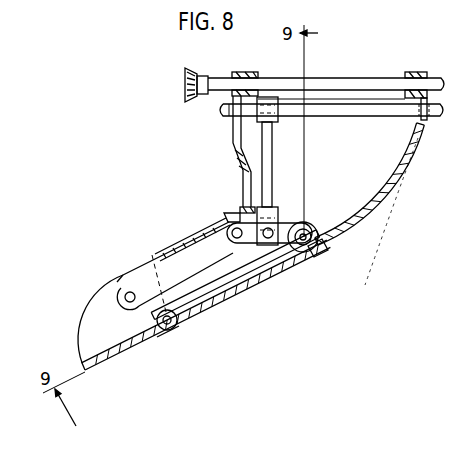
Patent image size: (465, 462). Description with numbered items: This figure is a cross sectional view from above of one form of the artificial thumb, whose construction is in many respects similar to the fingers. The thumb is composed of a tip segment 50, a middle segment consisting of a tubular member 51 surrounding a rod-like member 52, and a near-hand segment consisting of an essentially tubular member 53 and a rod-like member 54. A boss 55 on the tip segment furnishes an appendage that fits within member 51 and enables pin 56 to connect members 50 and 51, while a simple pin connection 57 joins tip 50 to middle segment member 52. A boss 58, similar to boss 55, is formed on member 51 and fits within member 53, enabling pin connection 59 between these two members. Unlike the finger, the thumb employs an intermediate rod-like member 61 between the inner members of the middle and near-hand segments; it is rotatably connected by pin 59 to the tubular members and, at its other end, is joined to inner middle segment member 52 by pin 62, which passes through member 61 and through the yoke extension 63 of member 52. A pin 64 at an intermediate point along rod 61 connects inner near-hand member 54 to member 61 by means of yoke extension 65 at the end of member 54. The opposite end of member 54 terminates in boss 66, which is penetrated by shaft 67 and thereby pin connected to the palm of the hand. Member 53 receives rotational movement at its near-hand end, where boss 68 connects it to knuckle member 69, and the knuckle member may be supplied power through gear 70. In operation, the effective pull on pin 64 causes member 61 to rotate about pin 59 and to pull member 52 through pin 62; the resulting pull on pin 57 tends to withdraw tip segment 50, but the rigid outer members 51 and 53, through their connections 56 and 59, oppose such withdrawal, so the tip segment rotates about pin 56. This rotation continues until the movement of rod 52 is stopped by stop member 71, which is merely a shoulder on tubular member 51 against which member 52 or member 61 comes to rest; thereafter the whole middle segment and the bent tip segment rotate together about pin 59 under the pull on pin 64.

The tip segment 50 is at (121, 362).
The tubular member 51 is at (216, 301).
The rod-like member 52 is at (200, 250).
The member of essentially tubular shape 53 is at (388, 195).
The rod-like member 54 is at (270, 148).
The boss 55 is at (172, 333).
The pin 56 is at (178, 327).
The pin connection 57 is at (132, 291).
The boss 58 is at (302, 250).
The pin connection 59 is at (316, 251).
The rod-like member 61 is at (252, 243).
The pin 62 is at (235, 246).
The yoke extension 63 is at (224, 218).
The pin 64 is at (283, 228).
The yoke extension 65 is at (271, 218).
The boss 66 is at (280, 114).
The shaft 67 is at (406, 113).
The boss 68 is at (427, 72).
The knuckle member 69 is at (355, 80).
The gear 70 is at (185, 85).
The stop member 71 is at (243, 204).